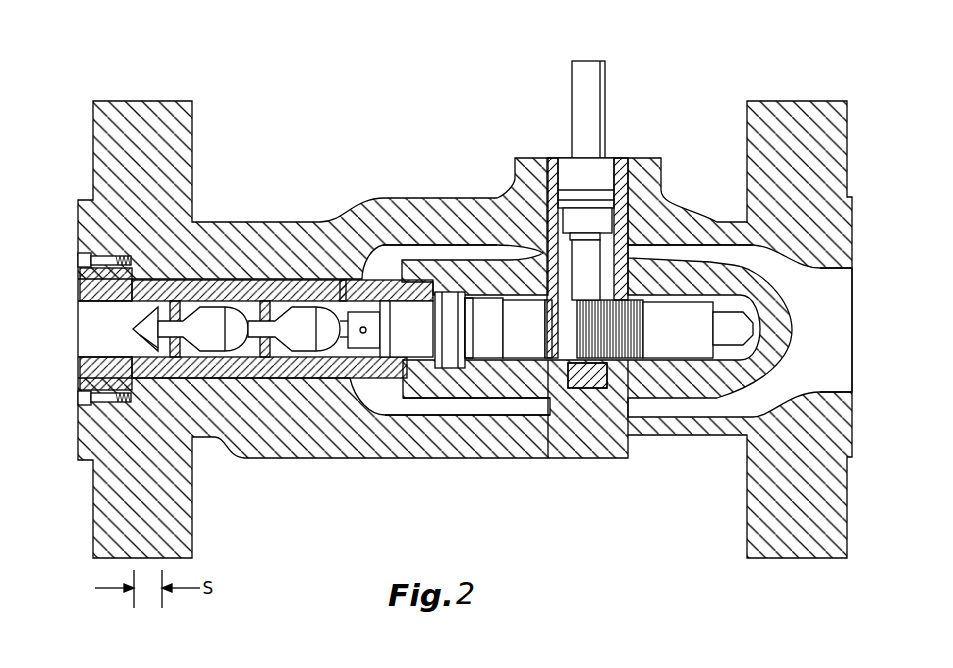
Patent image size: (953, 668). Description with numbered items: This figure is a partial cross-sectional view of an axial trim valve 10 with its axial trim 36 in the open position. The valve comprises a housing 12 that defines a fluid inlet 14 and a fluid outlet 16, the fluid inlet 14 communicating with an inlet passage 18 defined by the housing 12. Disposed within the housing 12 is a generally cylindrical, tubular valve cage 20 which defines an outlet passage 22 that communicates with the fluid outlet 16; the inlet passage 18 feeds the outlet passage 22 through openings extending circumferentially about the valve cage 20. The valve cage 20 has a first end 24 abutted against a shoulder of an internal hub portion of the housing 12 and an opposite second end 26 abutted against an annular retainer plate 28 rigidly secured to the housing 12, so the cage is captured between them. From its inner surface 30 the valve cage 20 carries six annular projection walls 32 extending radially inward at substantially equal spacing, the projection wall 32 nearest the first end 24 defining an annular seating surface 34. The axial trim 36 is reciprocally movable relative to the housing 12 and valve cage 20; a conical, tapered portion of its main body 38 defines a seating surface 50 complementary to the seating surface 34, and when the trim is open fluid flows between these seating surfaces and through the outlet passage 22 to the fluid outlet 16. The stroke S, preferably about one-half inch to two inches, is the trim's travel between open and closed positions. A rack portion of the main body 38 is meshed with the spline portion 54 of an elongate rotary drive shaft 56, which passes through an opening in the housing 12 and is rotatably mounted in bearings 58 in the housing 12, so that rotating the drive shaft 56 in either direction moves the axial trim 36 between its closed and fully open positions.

The axial trim valve 10 is at (645, 99).
The housing 12 is at (394, 193).
The fluid inlet 14 is at (860, 331).
The fluid outlet 16 is at (74, 331).
The inlet passage 18 is at (477, 409).
The valve cage 20 is at (233, 277).
The outlet passage 22 is at (345, 262).
The first end 24 is at (447, 296).
The second end 26 is at (90, 384).
The retainer plate 28 is at (85, 286).
The inner surface 30 is at (300, 354).
The projection walls 32 is at (180, 362).
The seating surface 34 is at (362, 282).
The axial trim 36 is at (490, 287).
The main body 38 is at (400, 360).
The seating surface 50 is at (358, 370).
The spline portion 54 is at (655, 360).
The drive shaft 56 is at (610, 66).
The bearings 58 is at (620, 175).